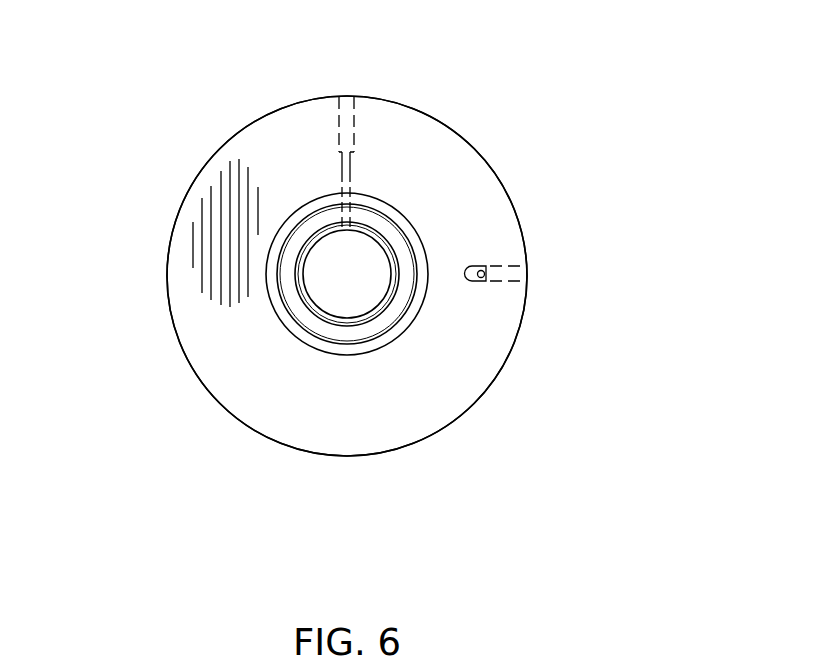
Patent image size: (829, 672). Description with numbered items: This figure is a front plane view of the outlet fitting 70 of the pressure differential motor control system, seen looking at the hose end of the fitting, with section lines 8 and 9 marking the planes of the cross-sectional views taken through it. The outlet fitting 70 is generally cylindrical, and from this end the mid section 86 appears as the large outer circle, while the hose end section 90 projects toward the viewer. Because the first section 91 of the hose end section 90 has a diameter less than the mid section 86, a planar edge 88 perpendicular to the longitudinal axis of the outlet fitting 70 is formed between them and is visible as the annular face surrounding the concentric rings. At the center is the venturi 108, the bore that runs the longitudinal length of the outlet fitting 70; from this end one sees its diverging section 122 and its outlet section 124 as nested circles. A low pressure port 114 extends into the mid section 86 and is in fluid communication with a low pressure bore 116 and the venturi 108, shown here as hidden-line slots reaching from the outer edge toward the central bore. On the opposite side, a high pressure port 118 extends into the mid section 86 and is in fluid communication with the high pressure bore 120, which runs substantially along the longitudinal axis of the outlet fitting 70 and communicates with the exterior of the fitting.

The section line 8- 8 is at (347, 72).
The section line 9- 9 is at (123, 275).
The outlet fitting 70 is at (582, 129).
The mid section 86 is at (196, 178).
The planar edge 88 is at (332, 435).
The hose end section 90 is at (293, 323).
The first section 91 is at (350, 356).
The venturi 108 is at (370, 232).
The low pressure port 114 is at (355, 107).
The low pressure bore 116 is at (342, 172).
The high pressure port 118 is at (500, 266).
The high pressure bore 120 is at (481, 278).
The diverging section 122 is at (386, 322).
The outlet section 124 is at (323, 323).